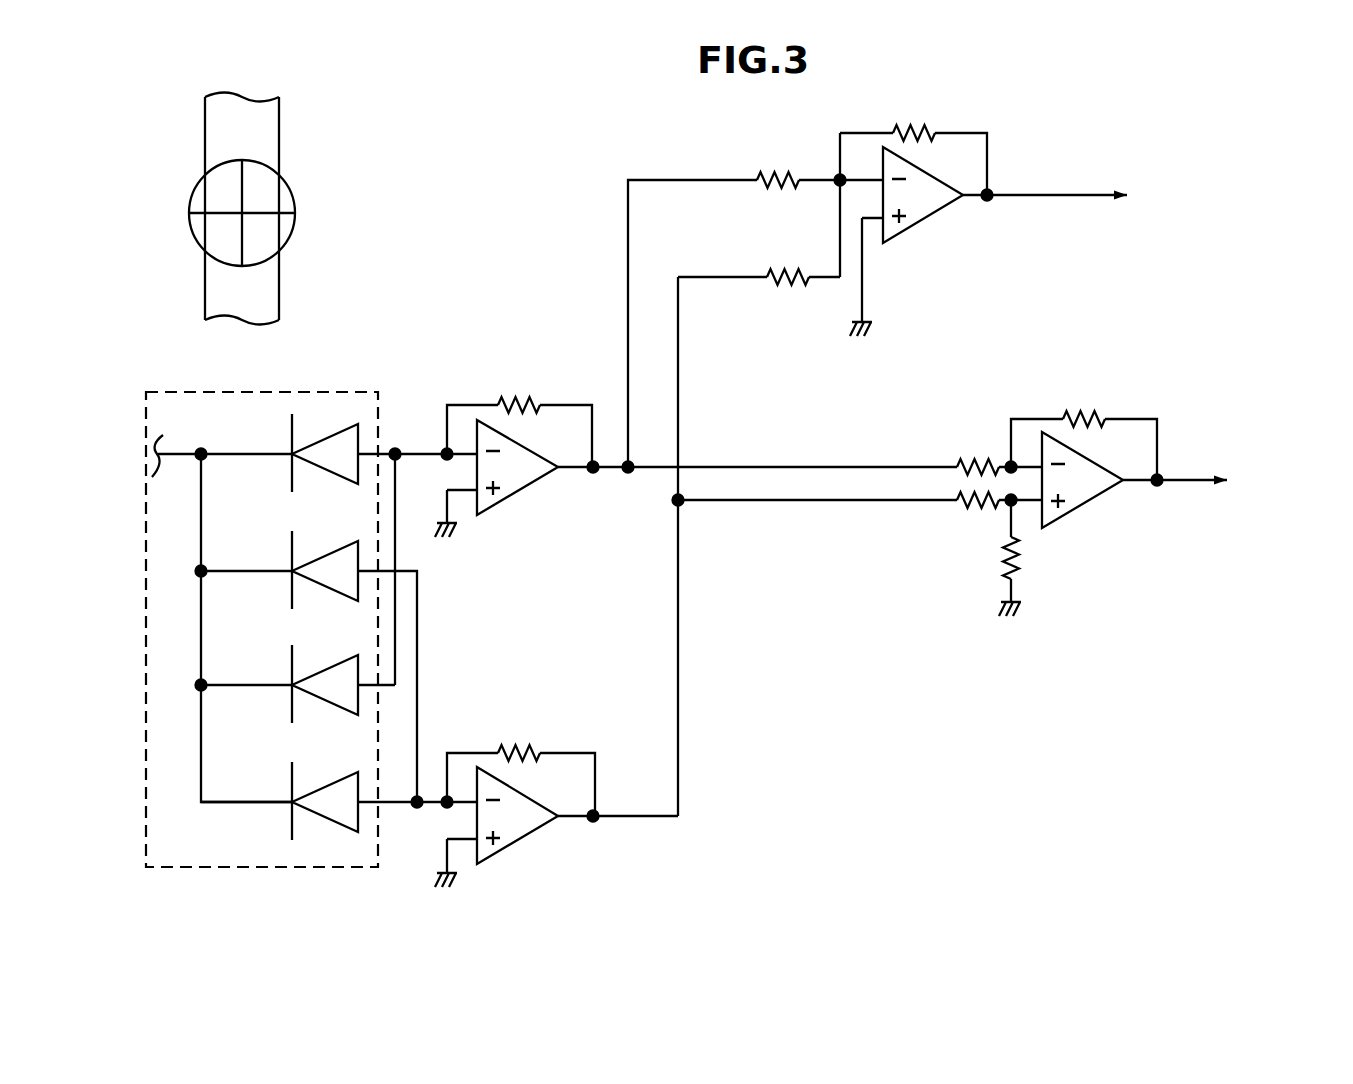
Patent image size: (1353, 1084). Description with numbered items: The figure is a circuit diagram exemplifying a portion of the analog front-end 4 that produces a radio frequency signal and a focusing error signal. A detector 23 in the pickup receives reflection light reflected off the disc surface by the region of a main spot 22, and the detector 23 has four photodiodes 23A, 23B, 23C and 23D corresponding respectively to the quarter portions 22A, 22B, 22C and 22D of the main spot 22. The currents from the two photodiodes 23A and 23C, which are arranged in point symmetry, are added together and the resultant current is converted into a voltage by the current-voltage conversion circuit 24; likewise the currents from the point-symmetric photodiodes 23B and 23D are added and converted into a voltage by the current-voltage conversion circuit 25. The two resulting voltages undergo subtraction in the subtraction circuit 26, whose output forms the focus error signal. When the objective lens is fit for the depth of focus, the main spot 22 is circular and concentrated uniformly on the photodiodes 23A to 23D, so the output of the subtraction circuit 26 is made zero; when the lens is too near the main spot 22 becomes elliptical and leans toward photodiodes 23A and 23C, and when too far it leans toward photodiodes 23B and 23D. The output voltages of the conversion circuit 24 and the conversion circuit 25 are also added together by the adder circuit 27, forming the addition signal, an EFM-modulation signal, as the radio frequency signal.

The main spot 22 is at (302, 212).
The quarter portion of the main spot 22A is at (222, 186).
The quarter portion of the main spot 22B is at (262, 191).
The quarter portion of the main spot 22C is at (263, 233).
The quarter portion of the main spot 22D is at (220, 237).
The detector 23 is at (253, 867).
The photodiode 23A is at (337, 549).
The photodiode 23B is at (307, 666).
The photodiode 23C is at (296, 684).
The photodiode 23D is at (339, 801).
The current-voltage conversion circuit 24 is at (538, 483).
The current-voltage conversion circuit 25 is at (536, 832).
The subtraction circuit 26 is at (1083, 500).
The adder circuit 27 is at (942, 212).
The analog front-end 4 is at (755, 760).